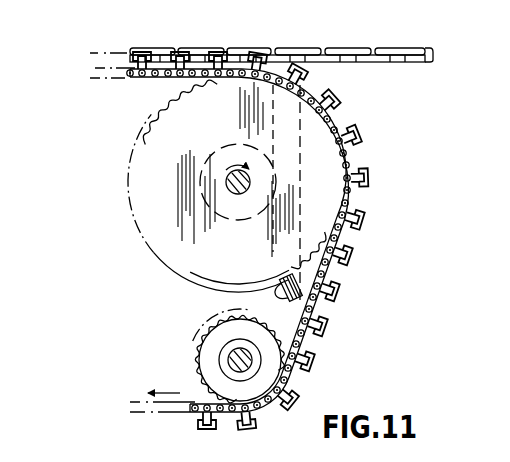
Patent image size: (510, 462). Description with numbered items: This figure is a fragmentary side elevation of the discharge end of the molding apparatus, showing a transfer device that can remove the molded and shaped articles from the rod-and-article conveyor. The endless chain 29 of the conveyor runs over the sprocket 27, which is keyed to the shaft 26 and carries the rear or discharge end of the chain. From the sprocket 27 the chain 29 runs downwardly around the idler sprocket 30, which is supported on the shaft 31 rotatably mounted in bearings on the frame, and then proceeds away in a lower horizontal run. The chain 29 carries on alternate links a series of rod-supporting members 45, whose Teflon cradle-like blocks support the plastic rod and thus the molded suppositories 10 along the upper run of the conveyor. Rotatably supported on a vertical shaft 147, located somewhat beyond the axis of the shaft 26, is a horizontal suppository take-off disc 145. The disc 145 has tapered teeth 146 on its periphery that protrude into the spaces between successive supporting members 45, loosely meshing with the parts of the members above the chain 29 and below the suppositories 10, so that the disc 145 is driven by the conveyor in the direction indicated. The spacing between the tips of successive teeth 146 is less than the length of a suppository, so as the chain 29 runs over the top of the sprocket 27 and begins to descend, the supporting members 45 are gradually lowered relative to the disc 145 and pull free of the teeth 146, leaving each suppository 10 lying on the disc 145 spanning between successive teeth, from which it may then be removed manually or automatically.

The molded suppositories 10 is at (167, 49).
The rod-supporting members 45 is at (185, 62).
The tapered teeth 146 is at (407, 64).
The suppository take-off disc 145 is at (440, 63).
The sprocket 27 is at (170, 115).
The shaft 26 is at (228, 185).
The vertical shaft 147 is at (272, 287).
The endless chain 29 is at (328, 281).
The shaft 31 is at (229, 359).
The idler sprocket 30 is at (200, 383).